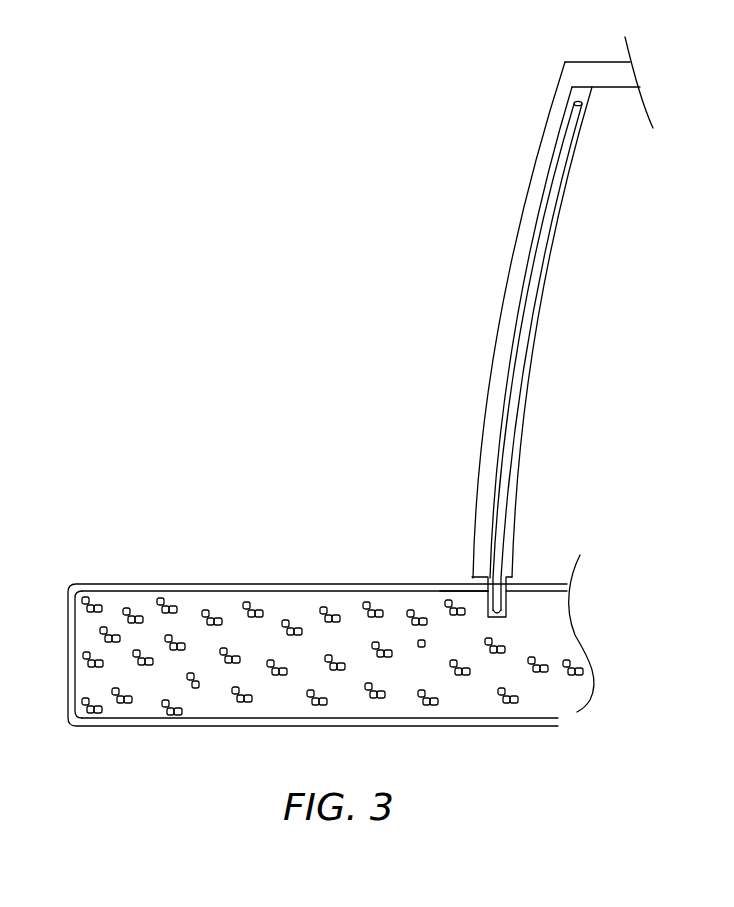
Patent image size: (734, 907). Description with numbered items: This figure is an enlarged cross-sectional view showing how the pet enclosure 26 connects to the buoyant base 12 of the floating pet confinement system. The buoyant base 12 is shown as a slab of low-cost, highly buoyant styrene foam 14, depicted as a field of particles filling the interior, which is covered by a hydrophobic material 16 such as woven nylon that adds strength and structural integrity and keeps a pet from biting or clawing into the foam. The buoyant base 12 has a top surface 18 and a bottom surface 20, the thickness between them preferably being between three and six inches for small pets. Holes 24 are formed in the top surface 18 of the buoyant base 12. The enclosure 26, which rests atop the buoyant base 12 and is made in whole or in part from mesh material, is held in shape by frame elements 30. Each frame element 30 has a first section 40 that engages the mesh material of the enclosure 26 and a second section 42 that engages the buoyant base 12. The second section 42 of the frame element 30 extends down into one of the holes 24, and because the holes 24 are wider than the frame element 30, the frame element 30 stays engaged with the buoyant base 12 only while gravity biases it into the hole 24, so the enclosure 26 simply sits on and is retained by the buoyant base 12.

The buoyant base 12 is at (75, 585).
The styrene foam 14 is at (141, 603).
The hydrophobic material 16 is at (160, 587).
The top surface 18 is at (544, 585).
The bottom surface 20 is at (160, 727).
The holes 24 is at (483, 598).
The enclosure 26 is at (550, 115).
The frame element 30 is at (549, 332).
The first section 40 is at (547, 257).
The second section 42 is at (505, 583).